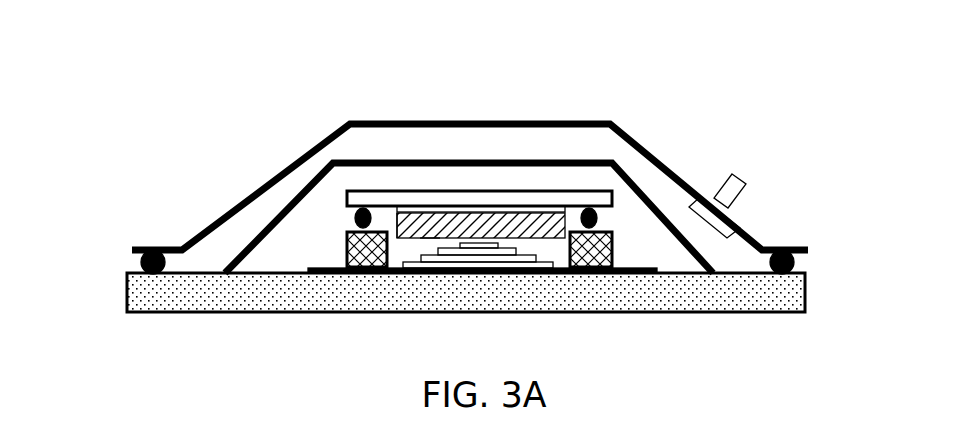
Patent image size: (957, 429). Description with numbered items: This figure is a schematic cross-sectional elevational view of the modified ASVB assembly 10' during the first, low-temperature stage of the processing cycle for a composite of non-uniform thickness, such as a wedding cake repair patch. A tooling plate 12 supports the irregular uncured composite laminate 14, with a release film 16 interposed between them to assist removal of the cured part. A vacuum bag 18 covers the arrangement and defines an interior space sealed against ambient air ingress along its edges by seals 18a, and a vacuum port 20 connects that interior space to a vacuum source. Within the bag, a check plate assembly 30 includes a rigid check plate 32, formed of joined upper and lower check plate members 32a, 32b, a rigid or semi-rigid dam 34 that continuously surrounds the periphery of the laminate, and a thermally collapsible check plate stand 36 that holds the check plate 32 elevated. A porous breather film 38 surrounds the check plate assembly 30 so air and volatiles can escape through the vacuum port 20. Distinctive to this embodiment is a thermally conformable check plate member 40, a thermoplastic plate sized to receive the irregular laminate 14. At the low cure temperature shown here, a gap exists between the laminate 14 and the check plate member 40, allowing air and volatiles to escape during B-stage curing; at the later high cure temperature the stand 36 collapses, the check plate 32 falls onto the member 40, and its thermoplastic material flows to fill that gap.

The modified ASVB assembly 10' is at (121, 67).
The tooling plate 12 is at (279, 304).
The uncured composite laminate 14 is at (500, 255).
The release film 16 is at (629, 268).
The vacuum bag 18 is at (313, 151).
The seals 18a is at (140, 260).
The vacuum port 20 is at (735, 191).
The check plate assembly 30 is at (361, 182).
The check plate 32 is at (488, 182).
The upper check plate member 32a is at (524, 205).
The lower check plate member 32b is at (432, 210).
The dam 34 is at (347, 253).
The check plate stand 36 is at (354, 220).
The porous breather film 38 is at (608, 160).
The conformable check plate member 40 is at (400, 228).